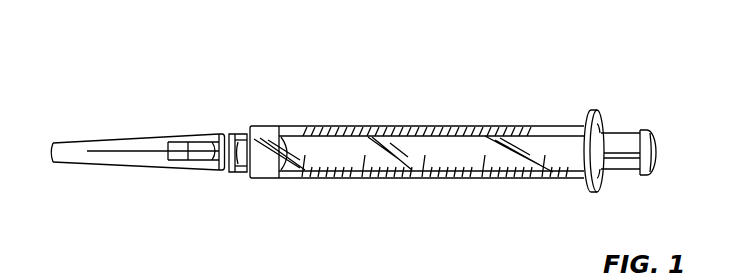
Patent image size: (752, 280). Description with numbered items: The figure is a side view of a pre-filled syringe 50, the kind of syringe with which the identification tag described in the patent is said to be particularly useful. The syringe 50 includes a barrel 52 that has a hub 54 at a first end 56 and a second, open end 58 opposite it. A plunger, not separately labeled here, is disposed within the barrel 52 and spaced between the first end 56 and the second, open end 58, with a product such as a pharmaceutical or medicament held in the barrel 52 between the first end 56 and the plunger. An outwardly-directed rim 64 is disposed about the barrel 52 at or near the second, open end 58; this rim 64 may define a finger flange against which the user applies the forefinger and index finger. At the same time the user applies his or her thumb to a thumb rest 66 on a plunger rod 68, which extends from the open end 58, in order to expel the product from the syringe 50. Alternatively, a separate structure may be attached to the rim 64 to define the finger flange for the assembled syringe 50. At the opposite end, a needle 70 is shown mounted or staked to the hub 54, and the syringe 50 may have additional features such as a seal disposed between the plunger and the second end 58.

The pre-filled syringe 50 is at (403, 68).
The barrel 52 is at (388, 178).
The hub 54 is at (209, 161).
The first end 56 is at (228, 184).
The second, open end 58 is at (578, 198).
The outwardly-directed rim 64 is at (587, 111).
The thumb rest 66 is at (658, 148).
The plunger rod 68 is at (625, 142).
The needle 70 is at (147, 147).